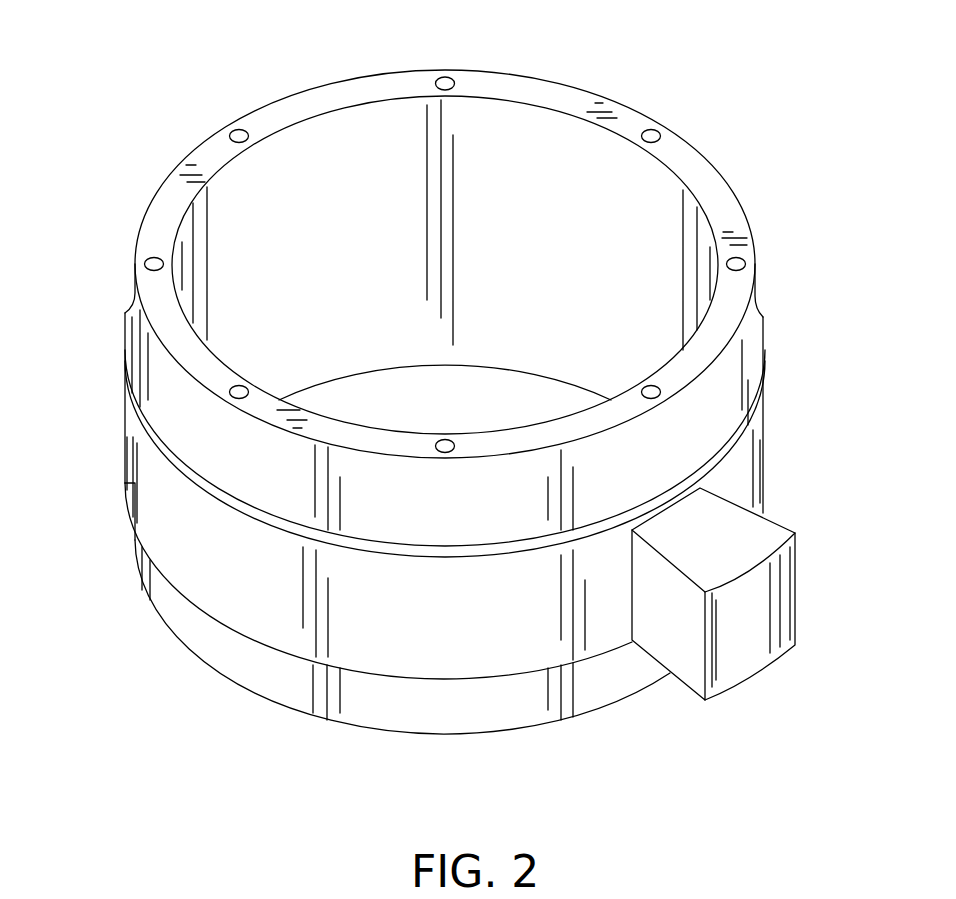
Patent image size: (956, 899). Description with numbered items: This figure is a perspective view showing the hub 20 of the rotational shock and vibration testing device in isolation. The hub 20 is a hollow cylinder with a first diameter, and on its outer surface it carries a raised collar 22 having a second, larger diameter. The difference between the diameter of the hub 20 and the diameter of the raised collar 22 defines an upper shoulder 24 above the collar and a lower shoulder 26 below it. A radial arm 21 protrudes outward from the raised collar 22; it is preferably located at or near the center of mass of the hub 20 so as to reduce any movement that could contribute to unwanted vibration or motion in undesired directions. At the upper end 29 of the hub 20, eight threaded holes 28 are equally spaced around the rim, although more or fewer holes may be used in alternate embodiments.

The hub 20 is at (75, 73).
The radial arm 21 is at (732, 640).
The raised collar 22 is at (193, 552).
The upper shoulder 24 is at (748, 413).
The lower shoulder 26 is at (403, 677).
The threaded holes 28 is at (738, 262).
The upper end 29 is at (373, 88).